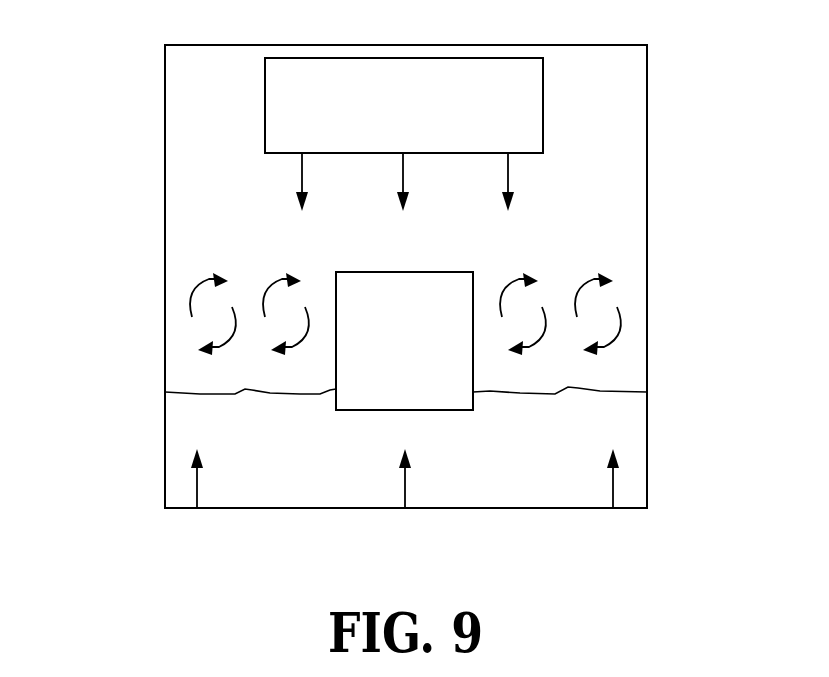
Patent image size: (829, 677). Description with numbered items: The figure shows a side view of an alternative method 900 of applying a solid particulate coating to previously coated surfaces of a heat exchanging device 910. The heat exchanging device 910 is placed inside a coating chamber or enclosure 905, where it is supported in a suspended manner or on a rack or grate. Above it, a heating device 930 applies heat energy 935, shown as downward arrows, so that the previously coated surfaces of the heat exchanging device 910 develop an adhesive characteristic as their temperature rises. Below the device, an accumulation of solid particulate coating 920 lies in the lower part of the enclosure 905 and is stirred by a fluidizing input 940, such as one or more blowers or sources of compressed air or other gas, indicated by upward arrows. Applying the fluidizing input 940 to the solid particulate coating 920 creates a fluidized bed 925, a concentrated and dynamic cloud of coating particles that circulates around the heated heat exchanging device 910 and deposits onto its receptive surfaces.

The heat transfer system 900 is at (107, 46).
The coating chamber or enclosure 905 is at (648, 128).
The heat exchanging device 910 is at (425, 272).
The solid particulate coating 920 is at (648, 428).
The fluidized bed 925 is at (602, 274).
The heating device 930 is at (508, 57).
The heat energy 935 is at (508, 168).
The fluidizing input 940 is at (613, 490).